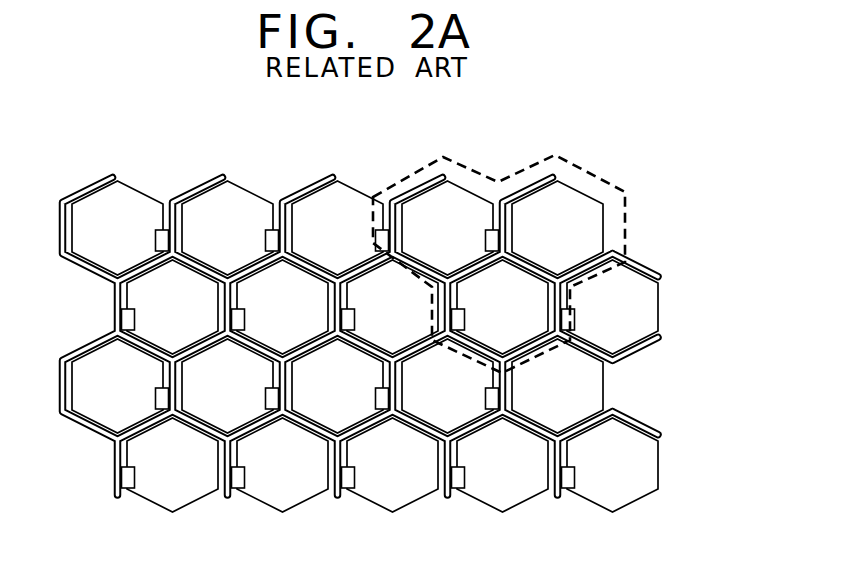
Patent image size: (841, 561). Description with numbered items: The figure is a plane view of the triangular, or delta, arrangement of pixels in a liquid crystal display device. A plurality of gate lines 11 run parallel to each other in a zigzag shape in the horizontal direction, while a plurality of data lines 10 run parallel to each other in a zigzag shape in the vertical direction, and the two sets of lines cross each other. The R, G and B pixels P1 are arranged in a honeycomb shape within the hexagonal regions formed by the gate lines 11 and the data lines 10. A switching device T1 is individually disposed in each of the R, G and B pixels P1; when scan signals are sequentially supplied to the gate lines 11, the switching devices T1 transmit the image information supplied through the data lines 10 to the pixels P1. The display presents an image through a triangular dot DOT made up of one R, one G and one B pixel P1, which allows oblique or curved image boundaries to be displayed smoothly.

The data line 10 is at (382, 312).
The gate line 11 is at (641, 268).
The switching device T1 is at (268, 232).
The pixel P1 is at (436, 206).
The triangular dot DOT is at (601, 176).